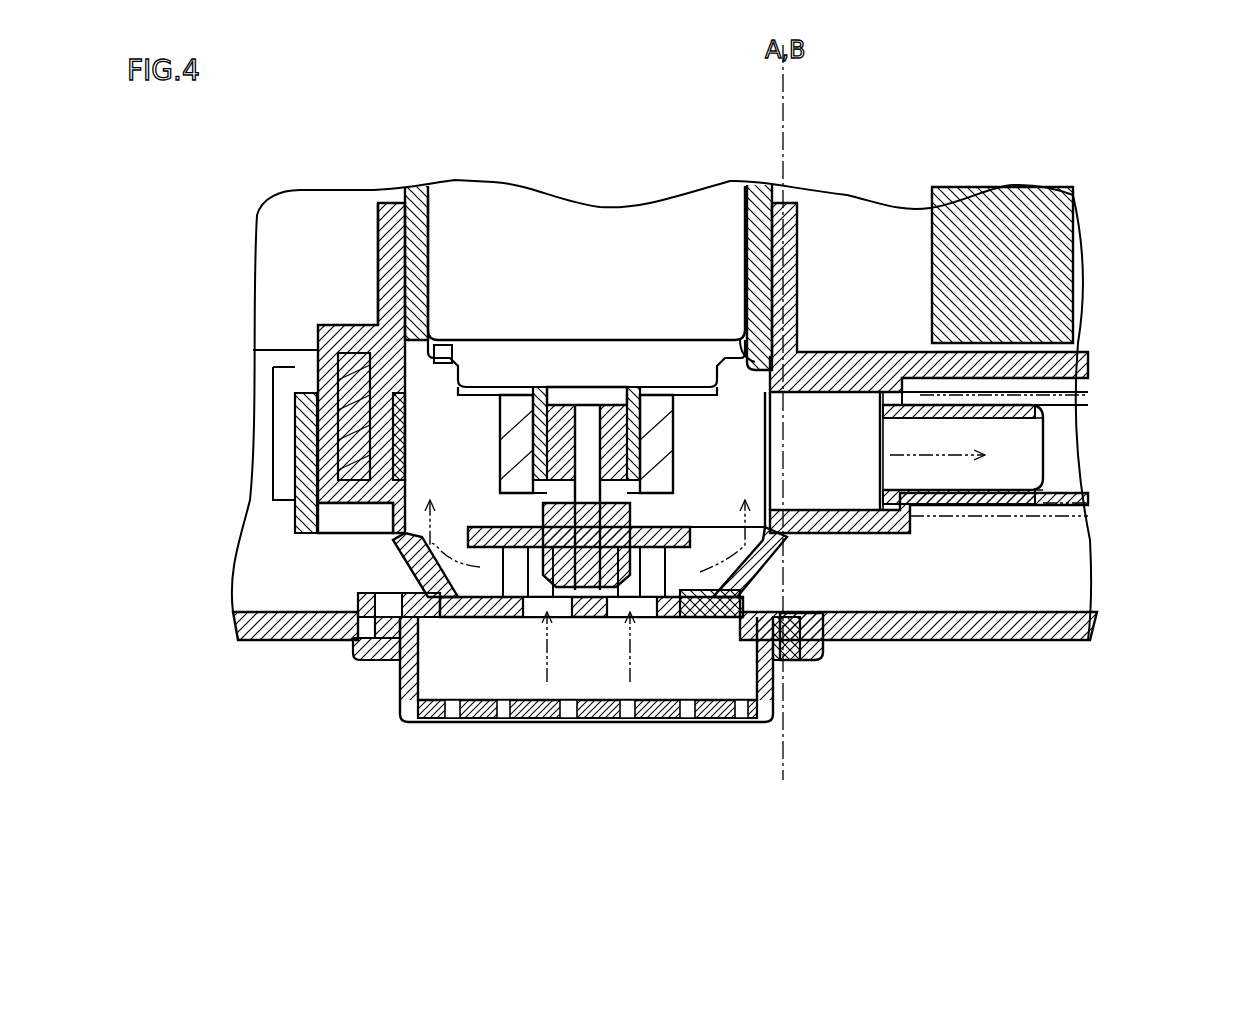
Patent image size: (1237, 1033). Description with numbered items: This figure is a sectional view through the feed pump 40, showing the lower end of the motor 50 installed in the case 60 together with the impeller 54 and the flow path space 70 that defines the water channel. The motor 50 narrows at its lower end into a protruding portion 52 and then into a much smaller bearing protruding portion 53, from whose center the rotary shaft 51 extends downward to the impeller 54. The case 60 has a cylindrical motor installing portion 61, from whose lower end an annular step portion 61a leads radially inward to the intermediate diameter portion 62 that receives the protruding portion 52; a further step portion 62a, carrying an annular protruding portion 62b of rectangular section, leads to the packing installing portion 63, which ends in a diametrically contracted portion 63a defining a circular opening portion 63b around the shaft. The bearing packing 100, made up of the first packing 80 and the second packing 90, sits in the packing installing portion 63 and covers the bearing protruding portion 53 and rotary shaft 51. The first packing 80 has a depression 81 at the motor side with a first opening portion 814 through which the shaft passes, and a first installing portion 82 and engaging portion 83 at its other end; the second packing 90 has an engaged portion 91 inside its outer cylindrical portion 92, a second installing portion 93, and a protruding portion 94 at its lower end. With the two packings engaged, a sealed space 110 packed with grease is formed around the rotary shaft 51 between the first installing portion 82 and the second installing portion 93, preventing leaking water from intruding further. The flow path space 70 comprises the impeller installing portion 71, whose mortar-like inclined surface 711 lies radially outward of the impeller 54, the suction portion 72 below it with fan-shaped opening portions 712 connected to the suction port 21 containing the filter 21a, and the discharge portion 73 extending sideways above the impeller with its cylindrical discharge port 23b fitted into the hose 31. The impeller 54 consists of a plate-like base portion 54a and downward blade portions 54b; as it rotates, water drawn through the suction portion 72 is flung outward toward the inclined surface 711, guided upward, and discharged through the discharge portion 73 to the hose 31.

The feed pump 40 is at (343, 267).
The motor installing portion 61 is at (412, 250).
The step portion 61a is at (452, 450).
The case 60 is at (417, 252).
The motor 50 is at (590, 230).
The protruding portion 52 is at (697, 363).
The bearing protruding portion 53 is at (602, 440).
The discharge portion 73 is at (840, 405).
The first packing 80 is at (687, 427).
The bearing packing 100 is at (1068, 617).
The discharge port 23b is at (1008, 503).
The hose 31 is at (993, 517).
The engaged portion 91 is at (1070, 640).
The sealed space 110 is at (780, 600).
The second packing 90 is at (657, 447).
The impeller installing portion 71 is at (422, 538).
The inclined surface 711 is at (443, 568).
The opening portion 712 is at (660, 590).
The impeller 54 is at (690, 570).
The base portion 54a is at (495, 560).
The blade portions 54b is at (535, 560).
The flow path space 70 is at (397, 643).
The suction port 21 is at (502, 727).
The filter 21a is at (538, 720).
The packing installing portion 63 is at (515, 463).
The diametrically contracted portion 63a is at (443, 495).
The opening portion 63b is at (635, 560).
The rotary shaft 51 is at (585, 590).
The suction portion 72 is at (642, 670).
The protruding portion 94 is at (600, 580).
The depression 81 is at (609, 430).
The first opening portion 814 is at (596, 455).
The first installing portion 82 is at (577, 440).
The protruding portion 62b is at (540, 475).
The step portion 62a is at (500, 470).
The intermediate diameter portion 62 is at (540, 410).
The engaging portion 83 is at (555, 458).
The outer cylindrical portion 92 is at (520, 461).
The second installing portion 93 is at (500, 452).